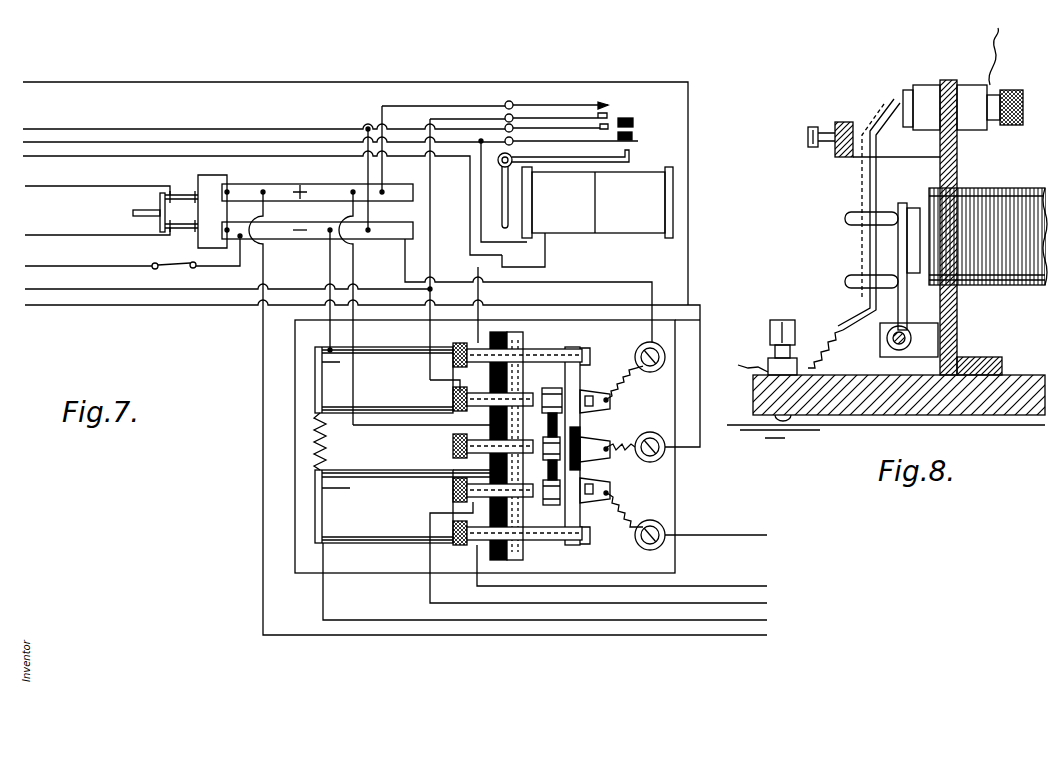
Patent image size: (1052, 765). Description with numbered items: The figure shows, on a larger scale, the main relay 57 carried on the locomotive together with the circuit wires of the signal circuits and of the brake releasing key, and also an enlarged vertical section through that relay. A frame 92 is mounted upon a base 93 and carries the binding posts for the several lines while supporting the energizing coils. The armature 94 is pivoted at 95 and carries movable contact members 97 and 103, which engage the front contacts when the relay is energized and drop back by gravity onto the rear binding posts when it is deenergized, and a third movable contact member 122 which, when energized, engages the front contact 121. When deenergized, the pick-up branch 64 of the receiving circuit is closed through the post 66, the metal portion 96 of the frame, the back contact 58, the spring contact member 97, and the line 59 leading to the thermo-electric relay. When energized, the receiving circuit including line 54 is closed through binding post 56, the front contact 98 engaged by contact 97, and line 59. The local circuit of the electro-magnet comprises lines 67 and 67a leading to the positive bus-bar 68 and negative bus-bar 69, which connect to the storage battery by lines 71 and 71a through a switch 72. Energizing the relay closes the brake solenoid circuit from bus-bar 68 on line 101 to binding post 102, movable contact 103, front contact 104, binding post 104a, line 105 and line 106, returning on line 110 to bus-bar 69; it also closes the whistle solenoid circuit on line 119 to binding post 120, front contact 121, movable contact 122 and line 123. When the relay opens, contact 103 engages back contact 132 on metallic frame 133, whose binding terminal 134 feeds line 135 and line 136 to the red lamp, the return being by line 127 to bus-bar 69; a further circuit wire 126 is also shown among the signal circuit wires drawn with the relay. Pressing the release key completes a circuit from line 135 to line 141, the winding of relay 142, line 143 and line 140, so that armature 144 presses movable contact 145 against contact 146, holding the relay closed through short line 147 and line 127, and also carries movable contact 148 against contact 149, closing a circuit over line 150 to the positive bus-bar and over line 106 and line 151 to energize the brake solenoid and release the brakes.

In FIG. 7, the receiving circuit line 54 is at (472, 603).
In FIG. 8, the receiving circuit line 54 is at (996, 56).
In FIG. 7, the binding post 56 is at (453, 494).
In FIG. 8, the binding post 56 is at (995, 92).
In FIG. 7, the main relay 57 is at (360, 469).
In FIG. 8, the main relay 57 is at (996, 186).
In FIG. 7, the back contact 58 is at (583, 480).
In FIG. 8, the back contact 58 is at (848, 122).
In FIG. 7, the receiving circuit wire 59 is at (700, 535).
In FIG. 8, the receiving circuit wire 59 is at (746, 372).
In FIG. 7, the pick-up branch 64 is at (742, 586).
In FIG. 7, the binding post 66 is at (466, 545).
In FIG. 7, the local circuit line 67 is at (263, 473).
In FIG. 7, the local circuit line 67a is at (327, 347).
In FIG. 7, the positive bus-bar 68 is at (348, 184).
In FIG. 7, the negative bus-bar 69 is at (278, 239).
In FIG. 7, the battery line 71 is at (78, 186).
In FIG. 7, the battery line 71a is at (78, 235).
In FIG. 7, the switch 72 is at (159, 202).
In FIG. 7, the frame 92 is at (500, 334).
In FIG. 8, the frame 92 is at (957, 142).
In FIG. 7, the base 93 is at (368, 574).
In FIG. 8, the base 93 is at (1016, 375).
In FIG. 7, the armature 94 is at (520, 545).
In FIG. 8, the armature 94 is at (917, 204).
In FIG. 8, the pivot 95 is at (888, 340).
In FIG. 7, the metal portion of frame 96 is at (592, 520).
In FIG. 7, the spring contact member 97 is at (550, 504).
In FIG. 8, the front contact 98 is at (903, 98).
In FIG. 7, the line 101 is at (406, 272).
In FIG. 7, the binding post 102 is at (655, 372).
In FIG. 7, the movable contact 103 is at (548, 386).
In FIG. 7, the front relay contact 104 is at (453, 392).
In FIG. 7, the binding post 104a is at (455, 384).
In FIG. 7, the line 105 is at (426, 340).
In FIG. 7, the line 106 is at (312, 288).
In FIG. 7, the line 110 is at (55, 266).
In FIG. 7, the line 119 is at (352, 284).
In FIG. 7, the binding post 120 is at (453, 437).
In FIG. 7, the front contact 121 is at (513, 443).
In FIG. 7, the movable contact member 122 is at (558, 442).
In FIG. 8, the movable contact member 122 is at (862, 184).
In FIG. 7, the line 123 is at (94, 308).
In FIG. 7, the conductor 126 is at (68, 83).
In FIG. 7, the line 127 is at (275, 131).
In FIG. 7, the back contact 132 is at (571, 391).
In FIG. 7, the metallic frame 133 is at (554, 350).
In FIG. 7, the binding terminal 134 is at (465, 343).
In FIG. 7, the line 135 is at (480, 292).
In FIG. 7, the line 136 is at (247, 156).
In FIG. 7, the line 140 is at (303, 142).
In FIG. 7, the line 141 is at (546, 243).
In FIG. 7, the relay 142 is at (638, 198).
In FIG. 7, the line 143 is at (481, 184).
In FIG. 7, the armature 144 is at (510, 184).
In FIG. 7, the movable contact 145 is at (605, 138).
In FIG. 7, the contact 146 is at (607, 108).
In FIG. 7, the short line 147 is at (463, 128).
In FIG. 7, the movable contact 148 is at (607, 115).
In FIG. 7, the contact 149 is at (598, 105).
In FIG. 7, the line 150 is at (408, 113).
In FIG. 7, the line 151 is at (432, 265).